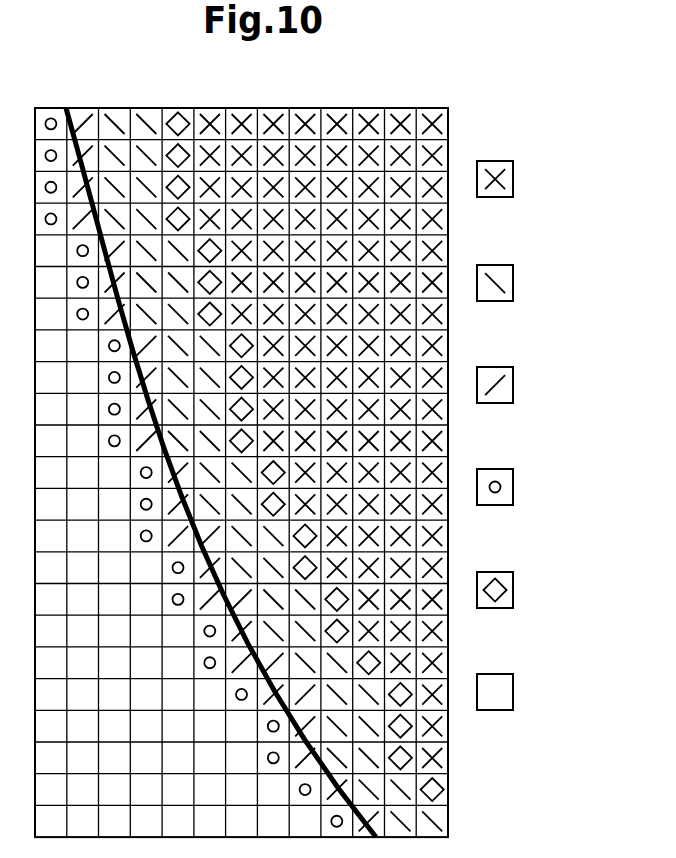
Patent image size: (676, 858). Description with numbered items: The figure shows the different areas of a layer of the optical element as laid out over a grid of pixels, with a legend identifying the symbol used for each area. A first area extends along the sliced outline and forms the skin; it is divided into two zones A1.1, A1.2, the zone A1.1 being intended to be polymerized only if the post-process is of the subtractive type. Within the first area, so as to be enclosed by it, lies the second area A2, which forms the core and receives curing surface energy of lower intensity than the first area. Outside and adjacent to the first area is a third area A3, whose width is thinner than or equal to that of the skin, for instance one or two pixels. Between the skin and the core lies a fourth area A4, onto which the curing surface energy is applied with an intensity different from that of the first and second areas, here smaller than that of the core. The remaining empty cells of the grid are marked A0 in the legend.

The second area A2 is at (519, 179).
The zone of the first area A1.2 is at (531, 283).
The zone of the first area A1.1 is at (531, 385).
The third area A3 is at (519, 487).
The fourth area A4 is at (519, 590).
The cell type A0 (empty cell) A0 is at (519, 692).